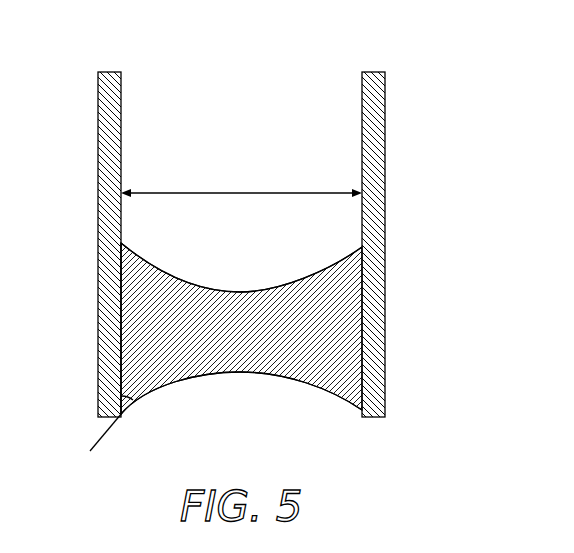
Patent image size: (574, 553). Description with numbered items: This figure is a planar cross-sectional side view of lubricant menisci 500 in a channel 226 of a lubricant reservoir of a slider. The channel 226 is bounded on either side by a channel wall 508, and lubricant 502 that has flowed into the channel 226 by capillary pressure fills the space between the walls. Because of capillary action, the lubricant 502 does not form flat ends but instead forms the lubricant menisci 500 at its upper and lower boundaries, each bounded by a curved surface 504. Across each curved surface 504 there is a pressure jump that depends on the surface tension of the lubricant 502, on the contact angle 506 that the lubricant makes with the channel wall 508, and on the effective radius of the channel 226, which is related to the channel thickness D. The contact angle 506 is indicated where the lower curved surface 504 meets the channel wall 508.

The channel 226 is at (307, 76).
The lubricant menisci 500 is at (288, 256).
The lubricant 502 is at (348, 325).
The curved surface 504 is at (243, 290).
The contact angle 506 is at (118, 363).
The channel wall 508 is at (385, 121).